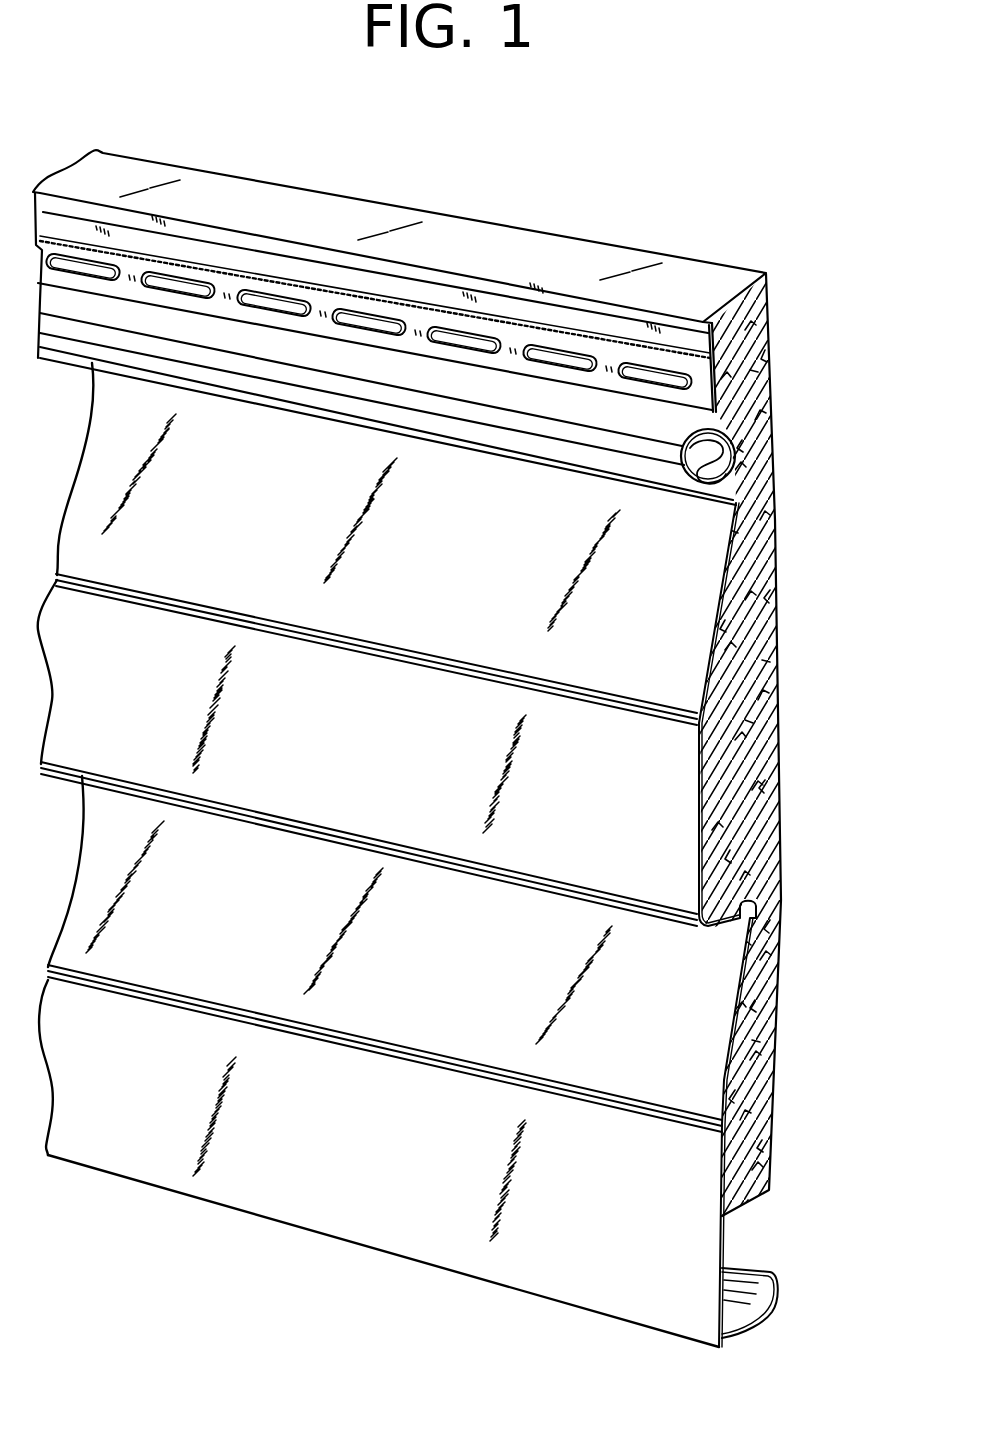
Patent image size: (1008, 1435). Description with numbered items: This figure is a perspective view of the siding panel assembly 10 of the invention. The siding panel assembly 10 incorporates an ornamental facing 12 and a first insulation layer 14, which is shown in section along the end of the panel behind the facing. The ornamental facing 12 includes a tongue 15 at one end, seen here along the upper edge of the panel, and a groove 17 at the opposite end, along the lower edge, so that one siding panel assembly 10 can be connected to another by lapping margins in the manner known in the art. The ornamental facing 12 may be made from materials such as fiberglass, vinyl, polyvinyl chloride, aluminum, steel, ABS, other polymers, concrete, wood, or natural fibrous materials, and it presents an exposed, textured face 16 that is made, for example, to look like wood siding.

The siding panel assembly 10 is at (865, 301).
The ornamental facing 12 is at (700, 849).
The first insulation layer 14 is at (765, 741).
The tongue 15 is at (500, 424).
The textured face 16 is at (337, 1164).
The groove 17 is at (742, 1297).